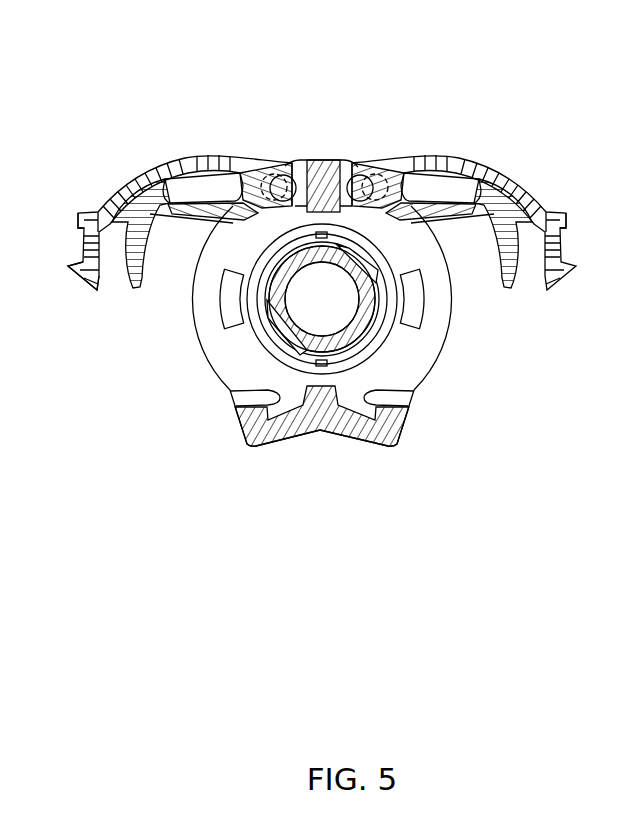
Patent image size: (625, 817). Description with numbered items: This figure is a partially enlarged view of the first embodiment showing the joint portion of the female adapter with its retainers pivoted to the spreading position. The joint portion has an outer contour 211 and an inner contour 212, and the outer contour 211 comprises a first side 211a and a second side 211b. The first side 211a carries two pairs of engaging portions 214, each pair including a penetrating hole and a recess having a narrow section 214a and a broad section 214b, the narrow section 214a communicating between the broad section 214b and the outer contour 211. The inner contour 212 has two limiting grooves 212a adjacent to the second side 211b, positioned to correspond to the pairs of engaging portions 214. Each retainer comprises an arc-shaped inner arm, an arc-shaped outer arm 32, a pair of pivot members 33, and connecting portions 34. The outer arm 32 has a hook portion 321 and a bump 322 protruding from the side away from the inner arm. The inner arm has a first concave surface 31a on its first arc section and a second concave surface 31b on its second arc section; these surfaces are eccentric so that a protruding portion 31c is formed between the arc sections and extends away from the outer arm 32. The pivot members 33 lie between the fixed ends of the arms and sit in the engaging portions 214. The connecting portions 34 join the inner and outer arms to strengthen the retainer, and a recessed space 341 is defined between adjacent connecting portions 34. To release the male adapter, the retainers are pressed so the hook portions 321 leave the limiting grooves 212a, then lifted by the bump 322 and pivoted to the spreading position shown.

The outer contour 211 is at (447, 343).
The first side 211a is at (336, 160).
The second side 211b is at (320, 432).
The inner contour 212 is at (383, 277).
The limiting groove 212a is at (229, 391).
The engaging portion 214 is at (350, 123).
The narrow section 214a is at (271, 139).
The broad section 214b is at (315, 158).
The first concave surface 31a is at (157, 206).
The second concave surface 31b is at (235, 212).
The protruding portion 31c is at (233, 220).
The outer arm 32 is at (152, 170).
The hook portion 321 is at (72, 267).
The bump 322 is at (78, 215).
The pivot member 33 is at (440, 200).
The connecting portion 34 is at (522, 187).
The recessed space 341 is at (472, 186).